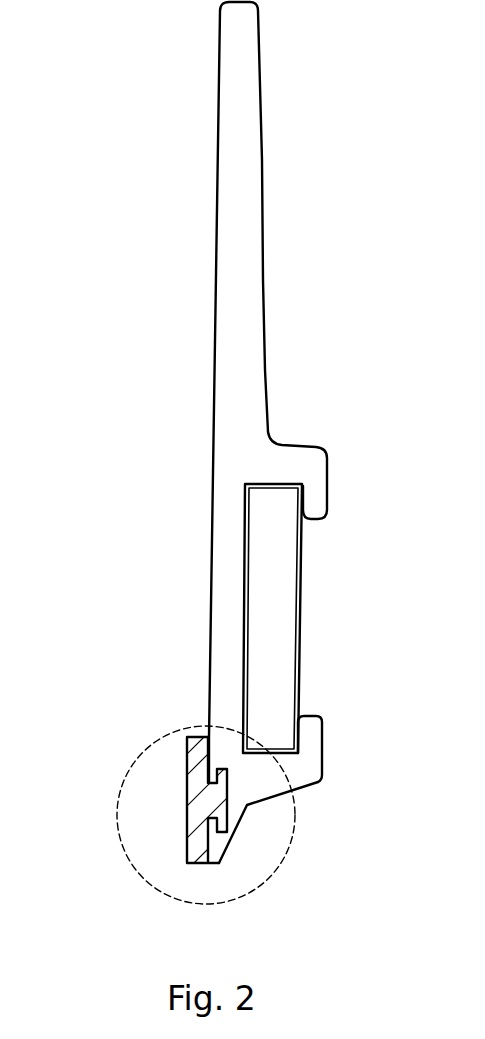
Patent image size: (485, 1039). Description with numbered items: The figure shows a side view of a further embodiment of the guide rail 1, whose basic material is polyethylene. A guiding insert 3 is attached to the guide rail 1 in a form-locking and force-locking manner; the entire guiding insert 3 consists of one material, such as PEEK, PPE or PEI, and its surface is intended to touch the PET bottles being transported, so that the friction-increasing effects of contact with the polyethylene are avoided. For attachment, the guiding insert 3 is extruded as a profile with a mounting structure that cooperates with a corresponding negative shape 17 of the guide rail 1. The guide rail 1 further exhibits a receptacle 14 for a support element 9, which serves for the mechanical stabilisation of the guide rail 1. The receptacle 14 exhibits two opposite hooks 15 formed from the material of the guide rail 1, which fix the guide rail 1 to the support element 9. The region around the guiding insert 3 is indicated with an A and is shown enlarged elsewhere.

The guide rail 1 is at (233, 323).
The guiding insert 3 is at (197, 770).
The support element 9 is at (284, 632).
The receptacle 14 is at (258, 576).
The hooks 15 is at (316, 507).
The negative shape 17 is at (248, 816).
The region around the guiding insert A is at (118, 810).